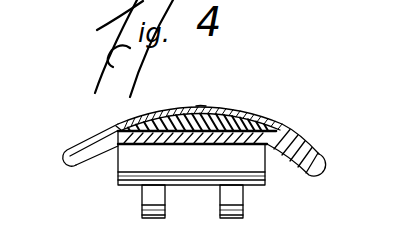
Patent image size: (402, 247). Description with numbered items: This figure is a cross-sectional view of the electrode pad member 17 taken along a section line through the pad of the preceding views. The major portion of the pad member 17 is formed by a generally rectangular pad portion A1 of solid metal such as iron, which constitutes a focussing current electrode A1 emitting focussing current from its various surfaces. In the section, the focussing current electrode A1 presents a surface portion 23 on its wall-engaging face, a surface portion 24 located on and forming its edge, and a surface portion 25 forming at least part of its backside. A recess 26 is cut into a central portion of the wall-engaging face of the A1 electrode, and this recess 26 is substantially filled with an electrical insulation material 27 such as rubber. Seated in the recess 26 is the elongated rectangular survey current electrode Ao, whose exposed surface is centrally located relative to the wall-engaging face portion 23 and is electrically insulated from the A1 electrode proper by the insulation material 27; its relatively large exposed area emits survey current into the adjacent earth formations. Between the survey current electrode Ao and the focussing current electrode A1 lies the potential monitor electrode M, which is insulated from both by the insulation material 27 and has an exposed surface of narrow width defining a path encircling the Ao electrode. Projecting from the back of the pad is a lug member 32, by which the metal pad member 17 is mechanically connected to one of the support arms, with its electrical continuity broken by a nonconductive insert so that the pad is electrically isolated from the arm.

The electrode pad member 17 is at (62, 145).
The surface portion 23 is at (77, 143).
The surface portion 24 is at (72, 163).
The surface portion 25 is at (100, 157).
The recess 26 is at (119, 124).
The electrical insulation material 27 is at (222, 112).
The lug member 32 is at (244, 207).
The survey current electrode Ao is at (201, 104).
The focussing current electrode A1 is at (293, 142).
The potential monitor electrode M is at (257, 118).